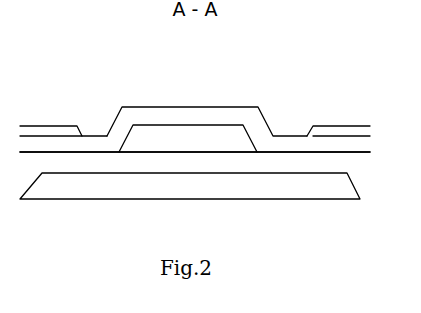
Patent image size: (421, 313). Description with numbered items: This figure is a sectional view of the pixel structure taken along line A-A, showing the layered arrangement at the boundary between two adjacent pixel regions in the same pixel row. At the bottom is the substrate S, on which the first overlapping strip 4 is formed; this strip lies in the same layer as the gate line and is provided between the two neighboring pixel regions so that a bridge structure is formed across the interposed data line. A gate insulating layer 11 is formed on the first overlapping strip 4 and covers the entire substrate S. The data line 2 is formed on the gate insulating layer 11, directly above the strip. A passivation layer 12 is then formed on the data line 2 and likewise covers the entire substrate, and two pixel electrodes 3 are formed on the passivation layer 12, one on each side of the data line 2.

The data line 2 is at (188, 101).
The pixel electrode 3 is at (63, 93).
The first overlapping strip 4 is at (328, 119).
The gate insulating layer 11 is at (195, 106).
The passivation layer 12 is at (207, 93).
The substrate S is at (190, 209).